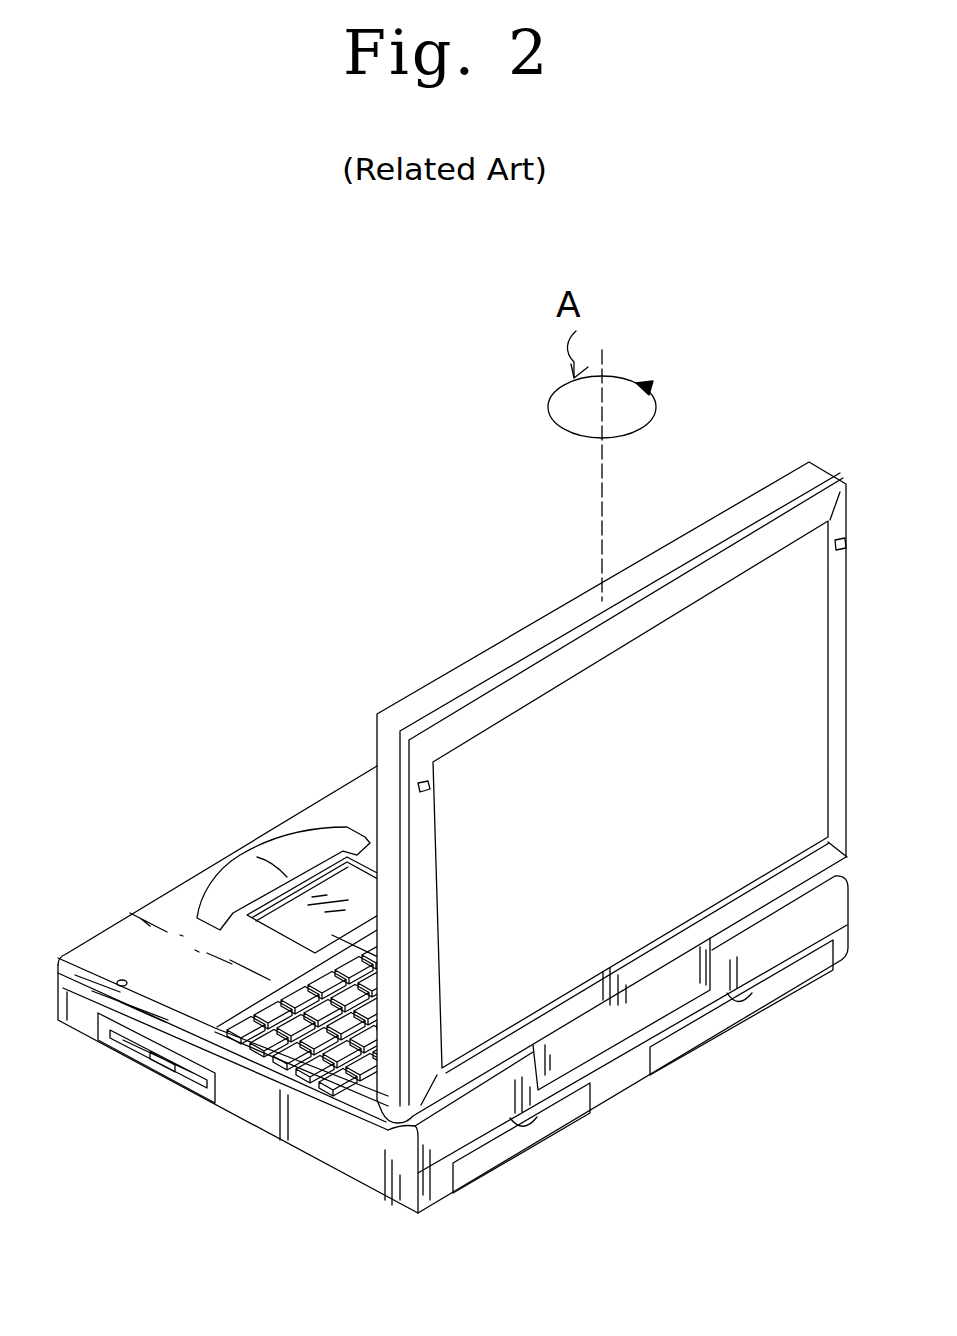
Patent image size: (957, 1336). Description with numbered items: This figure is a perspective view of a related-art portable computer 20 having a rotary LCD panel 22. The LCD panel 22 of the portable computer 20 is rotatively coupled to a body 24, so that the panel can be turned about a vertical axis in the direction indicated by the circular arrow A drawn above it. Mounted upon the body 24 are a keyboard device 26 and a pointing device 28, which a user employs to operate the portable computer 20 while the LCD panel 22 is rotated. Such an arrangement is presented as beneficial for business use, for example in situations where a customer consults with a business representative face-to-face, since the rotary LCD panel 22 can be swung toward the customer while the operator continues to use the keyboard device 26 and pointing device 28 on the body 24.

The portable computer 20 is at (190, 474).
The LCD panel 22 is at (486, 662).
The body 24 is at (180, 883).
The keyboard device 26 is at (305, 1063).
The pointing device 28 is at (337, 880).